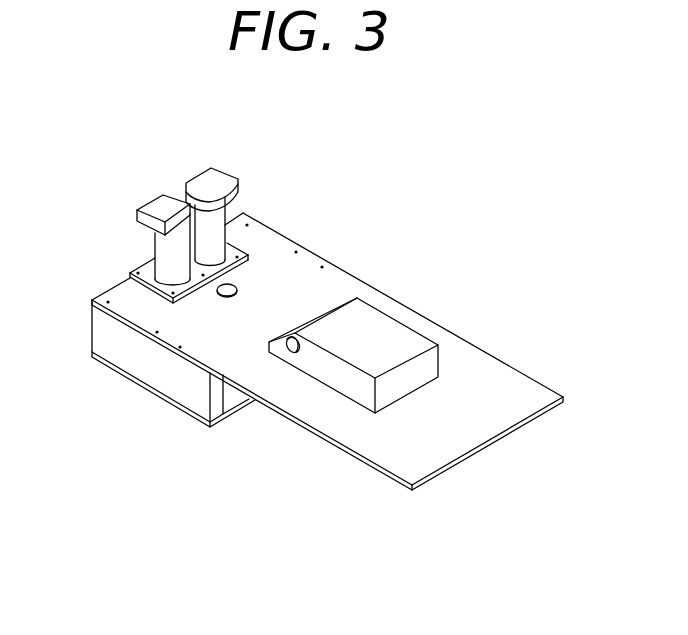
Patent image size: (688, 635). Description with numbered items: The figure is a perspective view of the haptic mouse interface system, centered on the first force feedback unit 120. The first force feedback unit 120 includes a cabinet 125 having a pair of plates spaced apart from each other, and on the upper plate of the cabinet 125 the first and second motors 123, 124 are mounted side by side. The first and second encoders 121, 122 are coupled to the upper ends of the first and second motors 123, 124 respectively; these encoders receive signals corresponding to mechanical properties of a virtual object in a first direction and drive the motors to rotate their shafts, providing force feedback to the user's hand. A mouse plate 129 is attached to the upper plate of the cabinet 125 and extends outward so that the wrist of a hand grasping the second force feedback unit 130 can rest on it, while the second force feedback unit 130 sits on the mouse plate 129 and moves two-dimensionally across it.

The first force feedback unit 120 is at (310, 213).
The first encoder 121 is at (162, 200).
The second encoder 122 is at (213, 170).
The first motor 123 is at (156, 248).
The second motor 124 is at (228, 214).
The cabinet 125 is at (297, 243).
The mouse plate 129 is at (290, 402).
The second force feedback unit 130 is at (397, 320).